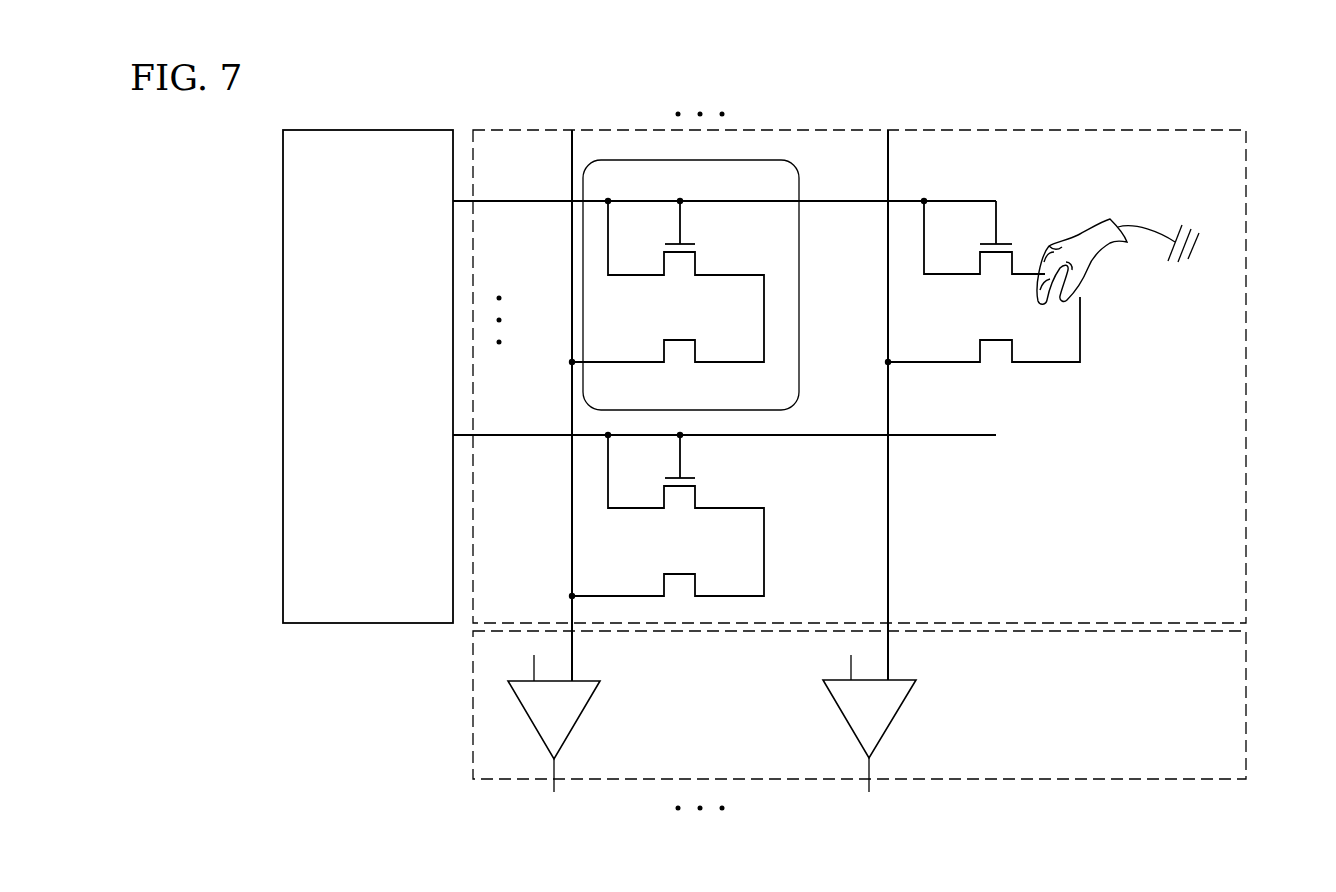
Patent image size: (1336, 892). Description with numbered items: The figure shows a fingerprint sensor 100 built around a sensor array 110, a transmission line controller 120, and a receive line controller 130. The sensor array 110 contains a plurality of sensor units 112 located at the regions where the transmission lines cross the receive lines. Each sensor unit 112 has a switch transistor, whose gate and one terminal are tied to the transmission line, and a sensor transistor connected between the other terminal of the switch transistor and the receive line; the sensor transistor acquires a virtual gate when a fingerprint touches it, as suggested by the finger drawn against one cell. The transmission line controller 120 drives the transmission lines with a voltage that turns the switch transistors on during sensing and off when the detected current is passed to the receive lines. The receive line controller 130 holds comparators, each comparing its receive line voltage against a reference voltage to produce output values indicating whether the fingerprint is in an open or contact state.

The fingerprint sensor 100 is at (1172, 84).
The sensor array 110 is at (1246, 367).
The sensor unit 112 is at (800, 273).
The transmission line controller 120 is at (403, 130).
The receive line controller 130 is at (1246, 695).